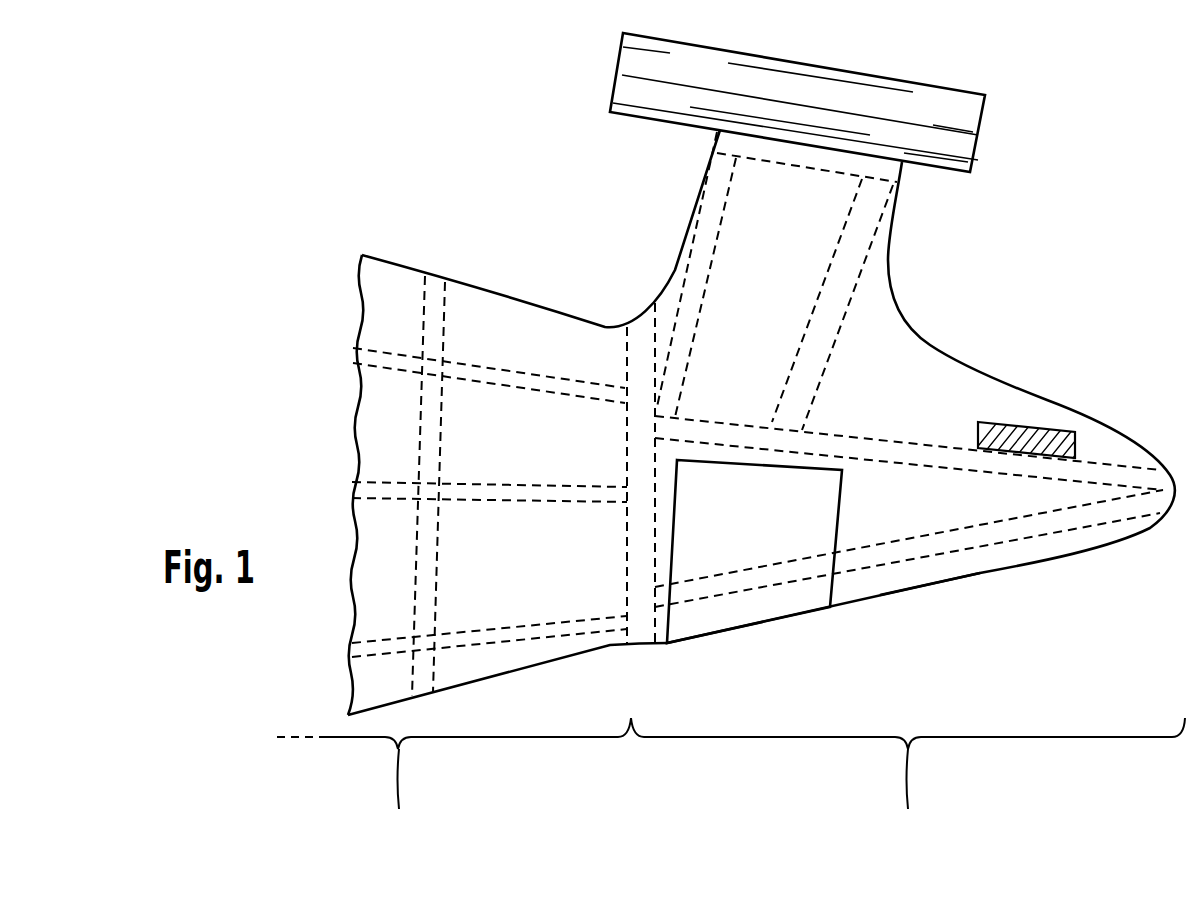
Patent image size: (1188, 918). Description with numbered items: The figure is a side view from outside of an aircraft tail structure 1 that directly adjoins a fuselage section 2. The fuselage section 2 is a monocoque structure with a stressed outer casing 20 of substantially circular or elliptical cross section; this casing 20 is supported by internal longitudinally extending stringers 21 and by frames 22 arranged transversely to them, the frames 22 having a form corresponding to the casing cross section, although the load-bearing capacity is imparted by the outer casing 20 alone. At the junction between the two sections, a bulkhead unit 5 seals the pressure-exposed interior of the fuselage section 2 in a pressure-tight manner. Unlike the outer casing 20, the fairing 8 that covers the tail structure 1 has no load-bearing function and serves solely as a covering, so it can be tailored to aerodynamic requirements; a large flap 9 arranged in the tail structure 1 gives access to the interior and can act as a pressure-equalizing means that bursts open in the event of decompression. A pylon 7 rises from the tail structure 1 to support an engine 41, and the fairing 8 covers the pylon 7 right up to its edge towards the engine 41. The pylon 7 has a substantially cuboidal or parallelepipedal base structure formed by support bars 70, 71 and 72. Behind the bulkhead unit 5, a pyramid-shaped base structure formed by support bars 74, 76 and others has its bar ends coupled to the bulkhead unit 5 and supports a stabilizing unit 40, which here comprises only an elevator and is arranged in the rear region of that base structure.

The tail structure 1 is at (908, 779).
The fuselage section 2 is at (454, 779).
The bulkhead unit 5 is at (639, 322).
The pylon 7 is at (660, 203).
The fairing 8 is at (947, 590).
The flap 9 is at (753, 607).
The outer casing 20 is at (480, 678).
The stringer 21 is at (353, 350).
The frame 22 is at (440, 280).
The stabilizing unit 40 is at (1037, 447).
The engine 41 is at (967, 120).
The support bar 70 is at (827, 313).
The support bar 71 is at (791, 160).
The support bar 72 is at (703, 260).
The support bar 74 is at (923, 453).
The support bar 76 is at (1062, 518).